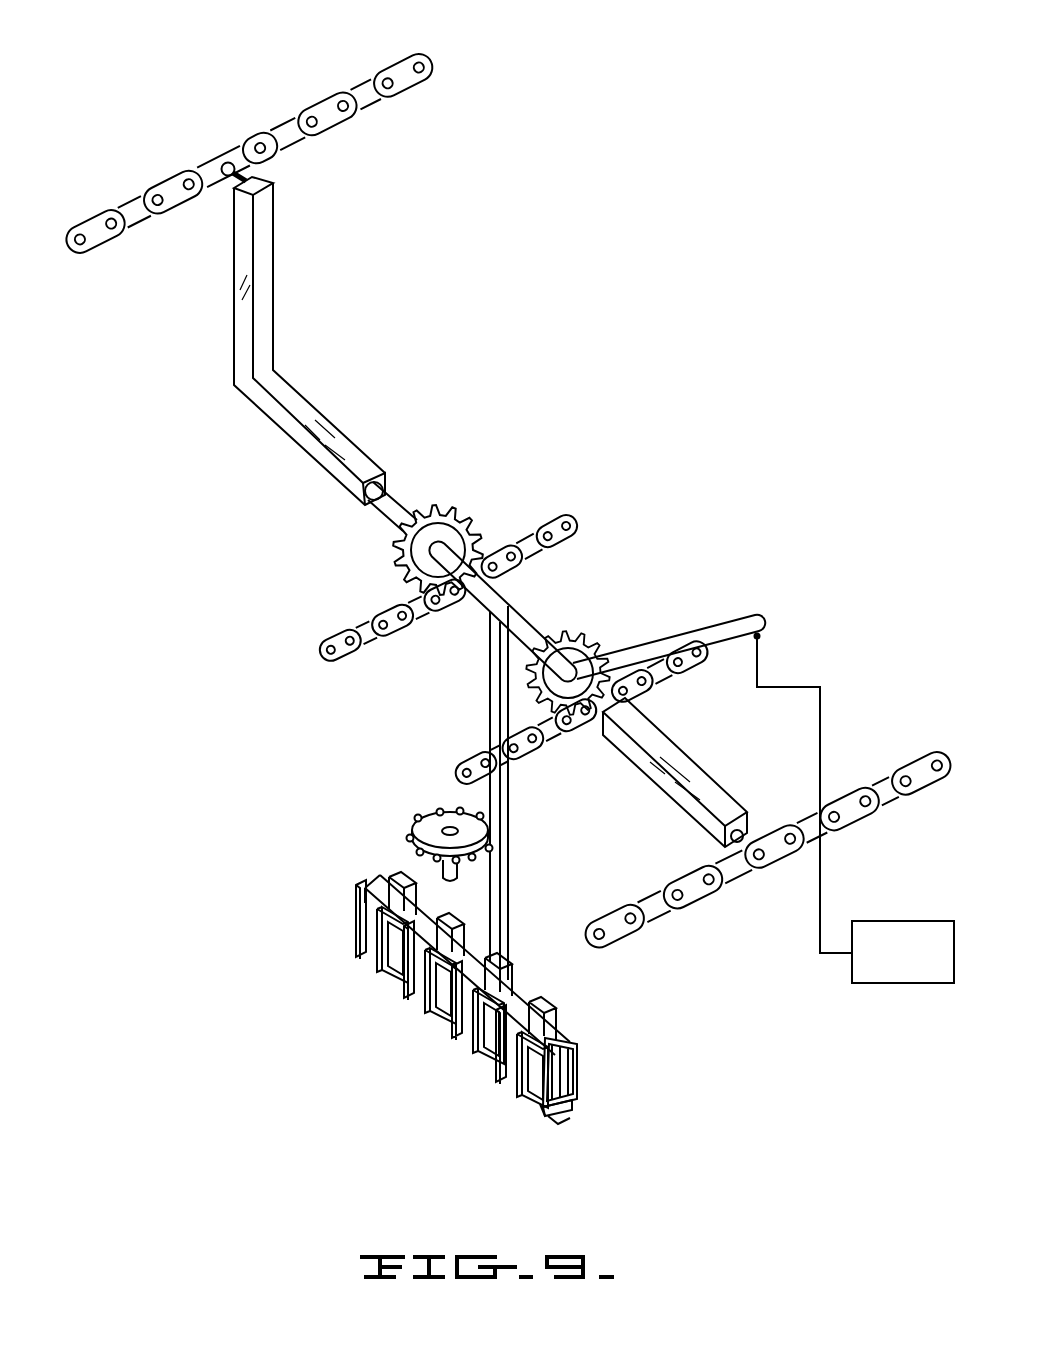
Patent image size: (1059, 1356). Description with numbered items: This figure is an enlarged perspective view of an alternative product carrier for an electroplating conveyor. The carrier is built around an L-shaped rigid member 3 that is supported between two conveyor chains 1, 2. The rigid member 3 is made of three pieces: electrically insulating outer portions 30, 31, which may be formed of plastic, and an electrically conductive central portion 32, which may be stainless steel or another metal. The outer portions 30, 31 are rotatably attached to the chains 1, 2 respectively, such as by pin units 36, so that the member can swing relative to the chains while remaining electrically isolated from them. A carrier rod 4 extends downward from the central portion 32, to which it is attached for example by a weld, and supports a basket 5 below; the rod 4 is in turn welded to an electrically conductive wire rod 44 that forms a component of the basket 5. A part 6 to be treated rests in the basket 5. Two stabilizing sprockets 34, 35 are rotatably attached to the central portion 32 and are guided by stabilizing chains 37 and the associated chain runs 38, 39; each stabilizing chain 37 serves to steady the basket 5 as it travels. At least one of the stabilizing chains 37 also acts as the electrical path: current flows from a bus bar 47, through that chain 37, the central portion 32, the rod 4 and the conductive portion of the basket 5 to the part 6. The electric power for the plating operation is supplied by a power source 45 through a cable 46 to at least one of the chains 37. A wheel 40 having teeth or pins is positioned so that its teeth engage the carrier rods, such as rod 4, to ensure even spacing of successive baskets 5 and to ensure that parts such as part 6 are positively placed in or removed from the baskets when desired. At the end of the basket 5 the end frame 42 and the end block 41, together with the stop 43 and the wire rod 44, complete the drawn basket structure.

The chain 1 is at (415, 50).
The chain 2 is at (929, 738).
The L-shaped rigid member 3 is at (483, 512).
The carrier rod 4 is at (490, 690).
The basket 5 is at (504, 1029).
The part 6 is at (484, 1050).
The electrically insulating outer portion 30 is at (268, 278).
The electrically insulating outer portion 31 is at (670, 747).
The electrically conductive central portion 32 is at (523, 585).
The stabilizing sprocket 34 is at (436, 510).
The stabilizing sprocket 35 is at (583, 631).
The pin unit 36 is at (236, 165).
The stabilizing chain 37 is at (603, 498).
The chain 38 is at (447, 597).
The chain 39 is at (528, 540).
The wheel 40 is at (418, 813).
The end block 41 is at (578, 1108).
The end frame 42 is at (582, 1088).
The stop 43 is at (560, 1130).
The electrically conductive wire rod 44 is at (545, 1113).
The power source 45 is at (910, 973).
The cable 46 is at (808, 669).
The bus bar 47 is at (757, 624).